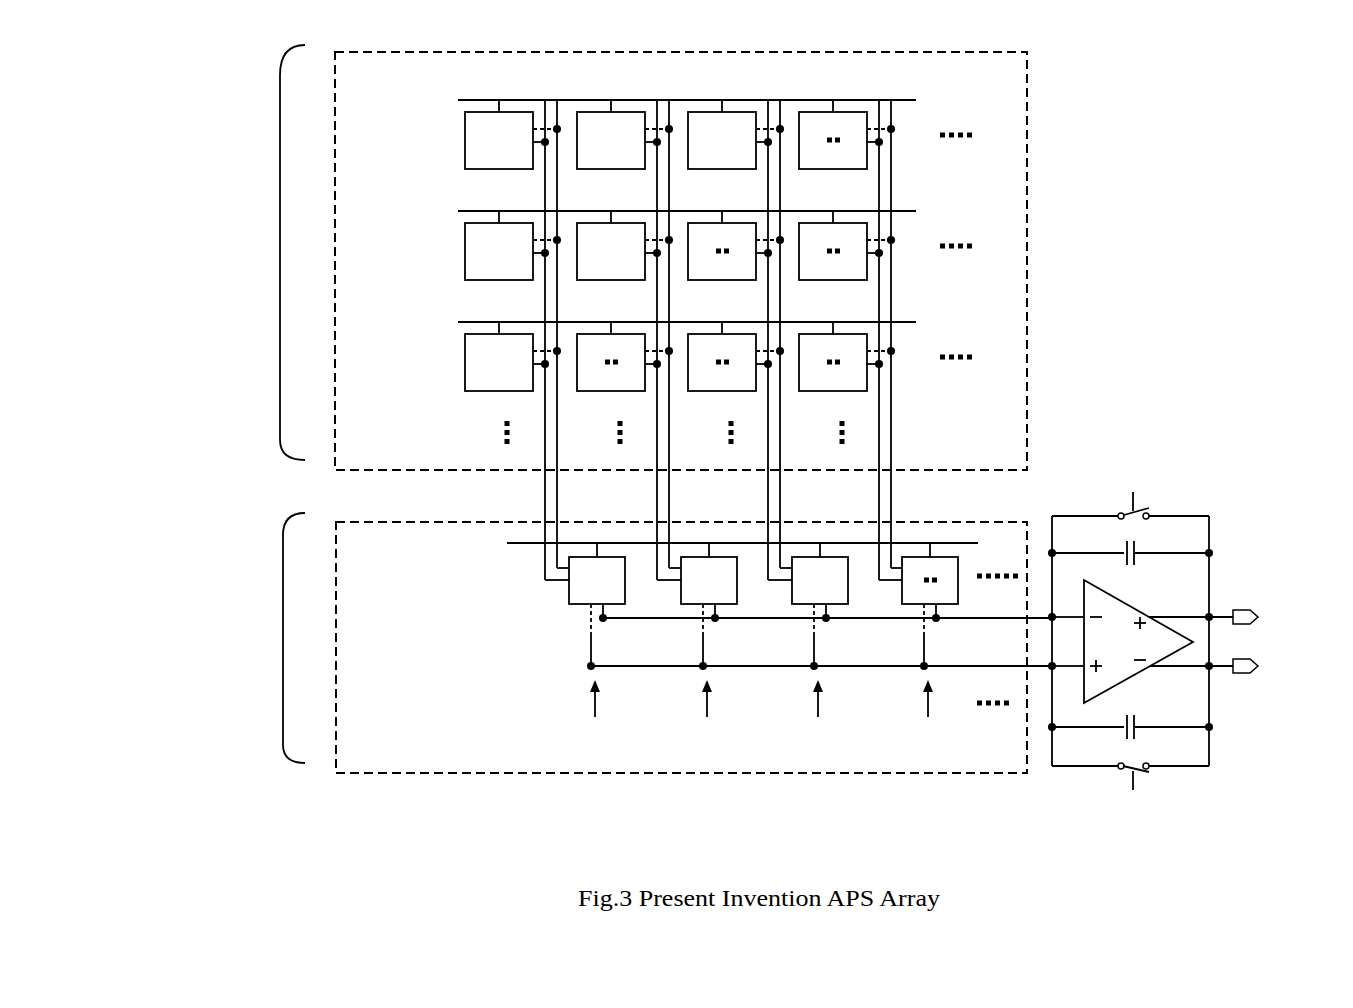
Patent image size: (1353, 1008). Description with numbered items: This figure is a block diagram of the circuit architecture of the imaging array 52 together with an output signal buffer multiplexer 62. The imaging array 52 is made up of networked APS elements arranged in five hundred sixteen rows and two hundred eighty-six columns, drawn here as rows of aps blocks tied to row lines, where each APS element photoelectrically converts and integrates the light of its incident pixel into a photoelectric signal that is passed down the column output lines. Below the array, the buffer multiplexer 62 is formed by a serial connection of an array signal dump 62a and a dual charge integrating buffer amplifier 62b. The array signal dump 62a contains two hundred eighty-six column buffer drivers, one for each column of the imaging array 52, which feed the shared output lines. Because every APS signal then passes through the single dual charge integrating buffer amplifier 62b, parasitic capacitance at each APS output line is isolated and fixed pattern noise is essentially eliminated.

The imaging array 52 is at (280, 253).
The output signal buffer multiplexer 62 is at (283, 623).
The array signal dump 62a is at (525, 543).
The dual charge integrating buffer amplifier 62b is at (1051, 492).